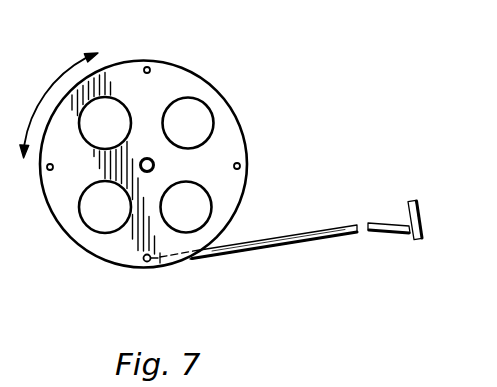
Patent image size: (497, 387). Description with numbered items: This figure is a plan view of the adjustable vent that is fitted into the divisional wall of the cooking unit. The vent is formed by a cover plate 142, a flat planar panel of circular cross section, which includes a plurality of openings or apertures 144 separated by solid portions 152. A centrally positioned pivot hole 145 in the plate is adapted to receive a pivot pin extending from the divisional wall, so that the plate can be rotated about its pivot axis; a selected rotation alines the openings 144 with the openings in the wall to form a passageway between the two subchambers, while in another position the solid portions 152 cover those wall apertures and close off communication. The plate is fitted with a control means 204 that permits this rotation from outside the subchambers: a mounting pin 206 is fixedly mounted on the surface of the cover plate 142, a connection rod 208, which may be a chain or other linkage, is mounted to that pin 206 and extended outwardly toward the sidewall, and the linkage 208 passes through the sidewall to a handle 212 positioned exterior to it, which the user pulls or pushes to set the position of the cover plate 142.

The cover plate 142 is at (149, 138).
The solid portions 152 is at (207, 80).
The openings or apertures 144 is at (203, 122).
The pivot hole 145 is at (154, 165).
The mounting pin 206 is at (147, 263).
The connection rod 208 is at (307, 243).
The control means 204 is at (393, 229).
The handle 212 is at (412, 195).